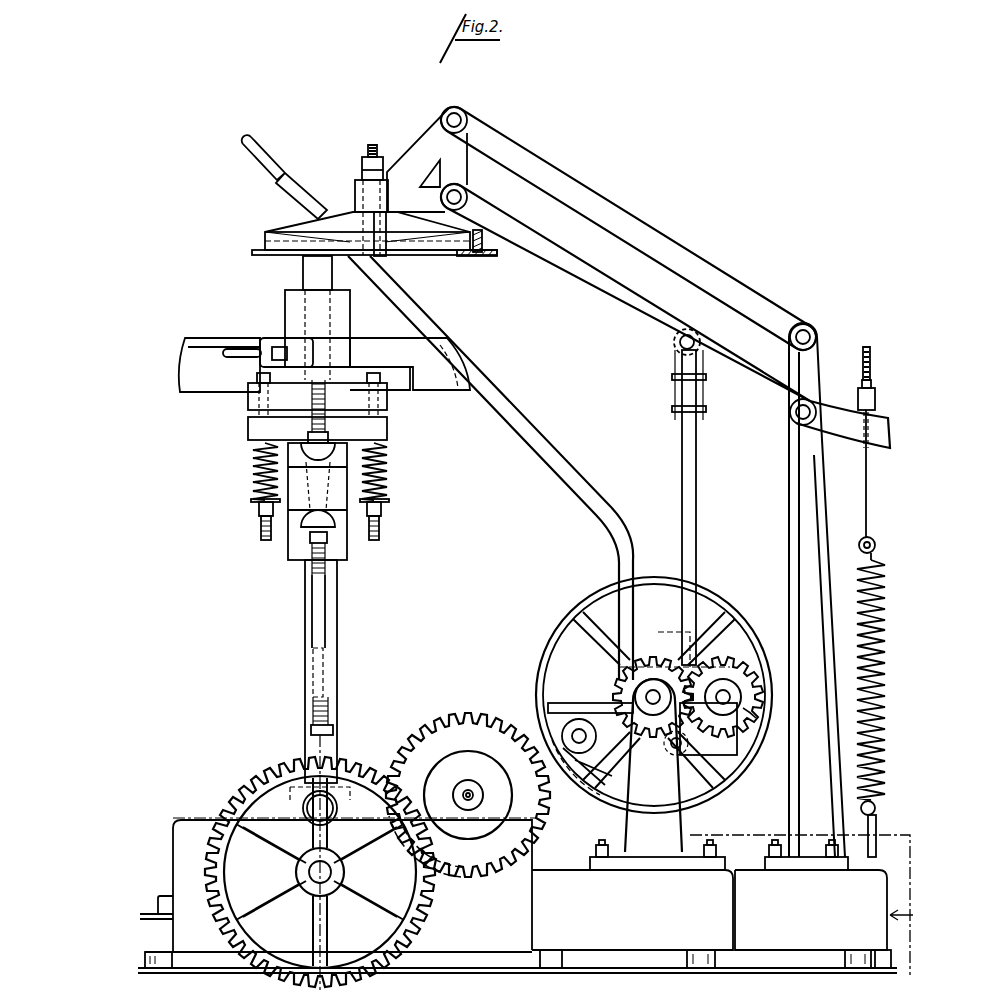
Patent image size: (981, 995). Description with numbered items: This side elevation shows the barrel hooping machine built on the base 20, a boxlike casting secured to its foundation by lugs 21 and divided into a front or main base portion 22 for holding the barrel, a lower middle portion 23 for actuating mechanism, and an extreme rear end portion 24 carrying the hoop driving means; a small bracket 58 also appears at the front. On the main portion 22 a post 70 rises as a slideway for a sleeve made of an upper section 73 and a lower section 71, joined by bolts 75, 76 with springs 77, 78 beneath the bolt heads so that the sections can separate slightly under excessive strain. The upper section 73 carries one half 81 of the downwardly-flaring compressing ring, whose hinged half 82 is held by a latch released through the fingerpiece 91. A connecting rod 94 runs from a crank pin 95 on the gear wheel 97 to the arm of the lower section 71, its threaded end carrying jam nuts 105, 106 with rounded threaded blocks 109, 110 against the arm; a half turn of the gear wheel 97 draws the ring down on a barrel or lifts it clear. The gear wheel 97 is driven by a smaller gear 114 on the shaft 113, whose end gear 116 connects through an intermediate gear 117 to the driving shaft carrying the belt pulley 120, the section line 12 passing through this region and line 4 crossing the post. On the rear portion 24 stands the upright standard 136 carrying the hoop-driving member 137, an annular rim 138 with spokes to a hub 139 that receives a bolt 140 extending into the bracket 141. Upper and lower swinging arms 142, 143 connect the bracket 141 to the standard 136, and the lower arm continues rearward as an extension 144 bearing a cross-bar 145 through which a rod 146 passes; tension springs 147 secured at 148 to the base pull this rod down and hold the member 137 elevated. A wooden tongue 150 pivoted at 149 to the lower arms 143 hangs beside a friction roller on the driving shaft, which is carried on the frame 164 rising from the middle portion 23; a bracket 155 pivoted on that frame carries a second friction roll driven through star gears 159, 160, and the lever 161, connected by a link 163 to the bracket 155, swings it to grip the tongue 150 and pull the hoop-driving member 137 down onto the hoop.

The section line 4— 4 is at (305, 648).
The section line 12— 12 is at (763, 808).
The base 20 is at (517, 981).
The lugs 21 is at (165, 958).
The front or main base portion 22 is at (338, 886).
The lower middle base portion 23 is at (632, 910).
The extreme rear end base portion 24 is at (811, 895).
The bracket 58 is at (152, 910).
The posts 70 is at (337, 631).
The lower sleeve section 71 is at (295, 525).
The upper sleeve section 73 is at (250, 402).
The bolt 75 is at (259, 531).
The bolt 76 is at (381, 531).
The spring 77 is at (252, 469).
The spring 78 is at (388, 469).
The fixed half of compressing ring 81 is at (445, 348).
The hinged half of compressing ring 82 is at (182, 346).
The fingerpiece 91 is at (242, 352).
The threaded rod 94 is at (318, 593).
The crank pin 95 is at (324, 806).
The gear wheel 97 is at (243, 790).
The jam nut 105 is at (327, 434).
The jam nut 106 is at (312, 540).
The threaded block 109 is at (328, 453).
The threaded block 110 is at (337, 532).
The shaft 113 is at (469, 792).
The gear 114 is at (527, 807).
The gear 116 is at (421, 716).
The intermediate gear 117 is at (537, 712).
The pulley 120 is at (581, 614).
The upright standard 136 is at (788, 579).
The hoop-driving member 137 is at (265, 244).
The annular rim 138 is at (476, 256).
The hub 139 is at (388, 248).
The bolt 140 is at (370, 150).
The bracket 141 is at (427, 150).
The upper swinging arms 142 is at (632, 210).
The lower swinging arms 143 is at (613, 292).
The rearward extension of lower arm 144 is at (887, 420).
The cross-bar 145 is at (858, 402).
The rod 146 is at (866, 486).
The tension spring 147 is at (878, 656).
The spring anchorage 148 is at (866, 846).
The pivot 149 is at (692, 330).
The tongue 150 is at (682, 492).
The bracket 155 is at (701, 729).
The star gear 159 is at (618, 680).
The star gear 160 is at (756, 714).
The lever 161 is at (520, 428).
The link 163 is at (706, 658).
The standard 164 is at (657, 774).